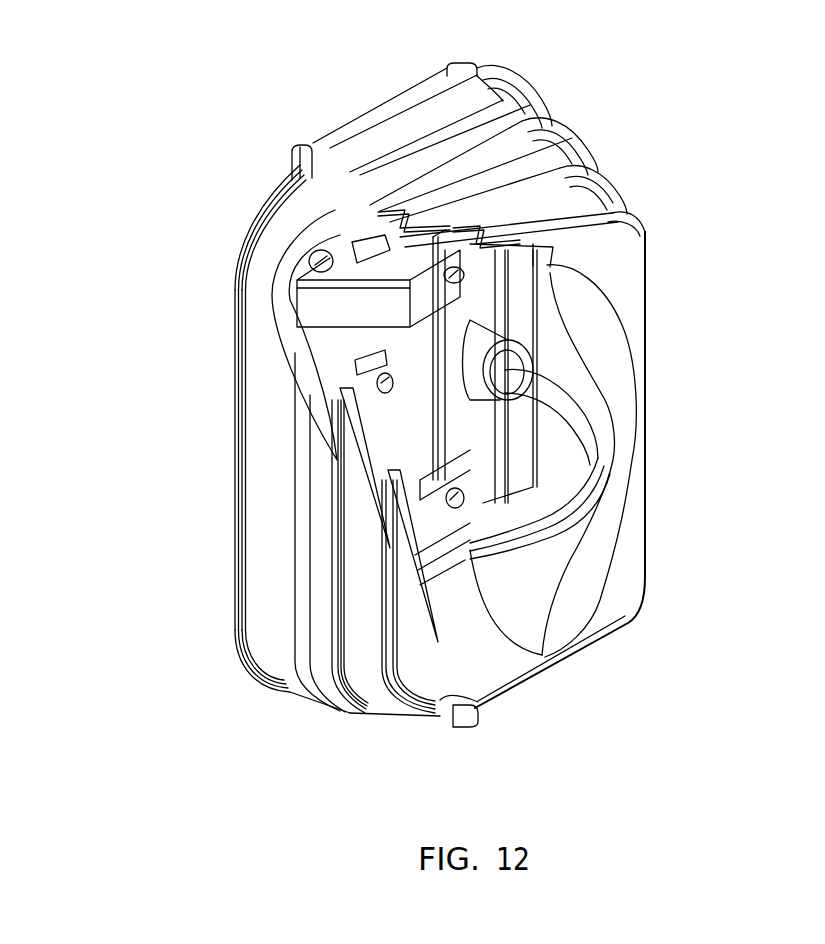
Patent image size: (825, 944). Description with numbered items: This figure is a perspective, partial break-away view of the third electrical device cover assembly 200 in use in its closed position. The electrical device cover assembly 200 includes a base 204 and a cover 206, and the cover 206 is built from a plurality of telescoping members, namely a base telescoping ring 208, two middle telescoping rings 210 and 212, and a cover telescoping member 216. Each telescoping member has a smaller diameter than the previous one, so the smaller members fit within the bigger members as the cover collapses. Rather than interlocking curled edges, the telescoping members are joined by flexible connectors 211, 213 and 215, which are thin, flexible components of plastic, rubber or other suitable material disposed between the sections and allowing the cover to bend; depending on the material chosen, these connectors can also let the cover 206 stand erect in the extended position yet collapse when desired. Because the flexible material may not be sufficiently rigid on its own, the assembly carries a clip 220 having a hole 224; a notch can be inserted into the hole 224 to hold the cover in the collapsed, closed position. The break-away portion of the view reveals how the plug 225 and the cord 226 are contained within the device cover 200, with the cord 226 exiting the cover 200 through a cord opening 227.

The electrical device cover assembly 200 is at (680, 258).
The base 204 is at (437, 473).
The cover 206 is at (522, 40).
The base telescoping ring 208 is at (263, 552).
The middle telescoping ring 210 is at (318, 633).
The flexible connector 211 is at (297, 621).
The middle telescoping ring 212 is at (368, 648).
The flexible connector 213 is at (330, 652).
The flexible connector 215 is at (425, 708).
The cover telescoping member 216 is at (617, 607).
The clip 220 is at (353, 302).
The hole 224 is at (453, 273).
The plug 225 is at (425, 342).
The cord 226 is at (575, 462).
The cord opening 227 is at (475, 718).